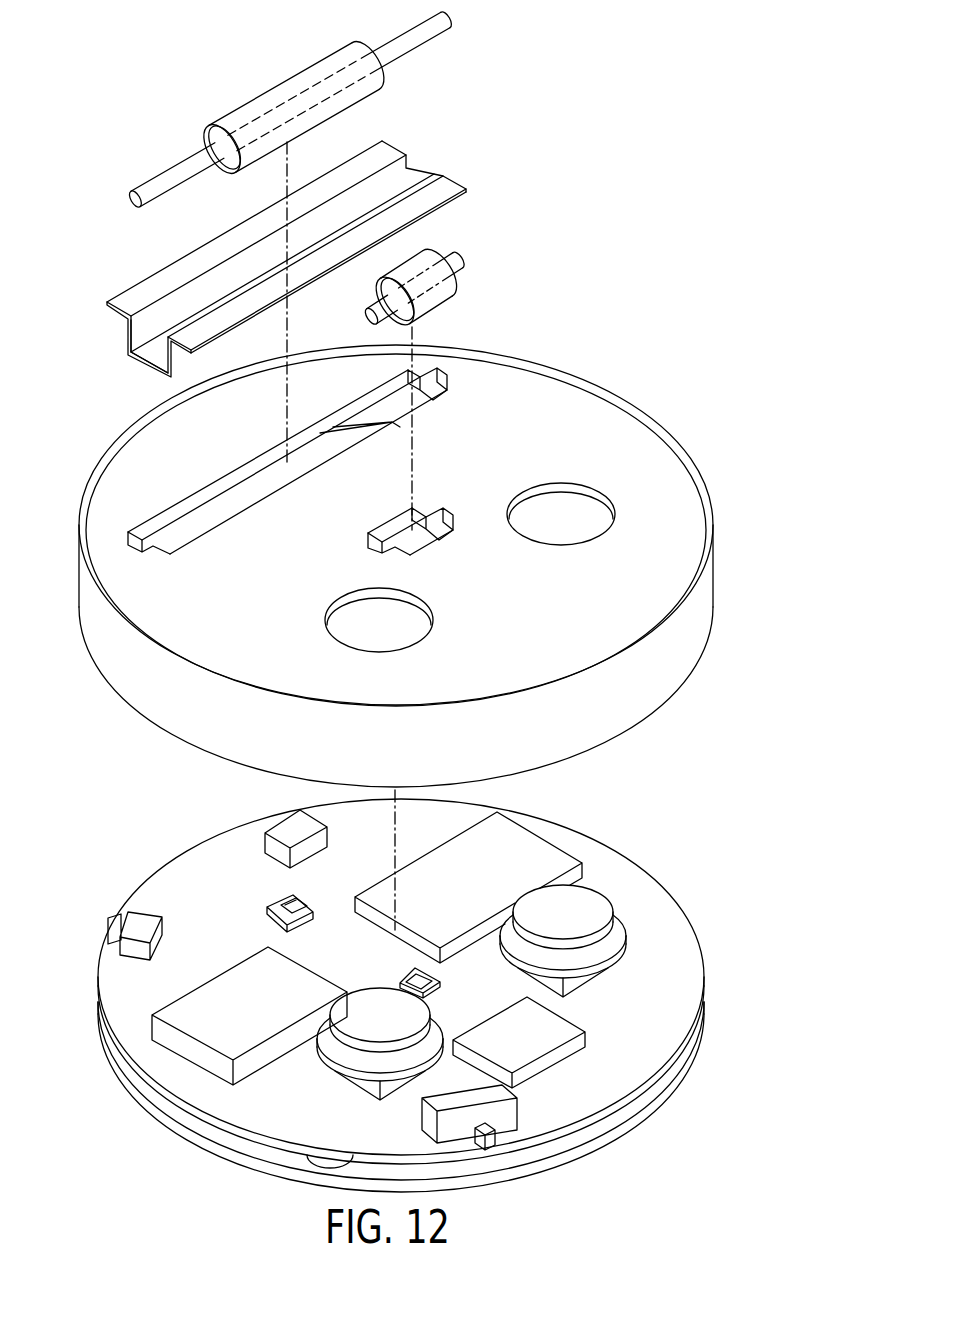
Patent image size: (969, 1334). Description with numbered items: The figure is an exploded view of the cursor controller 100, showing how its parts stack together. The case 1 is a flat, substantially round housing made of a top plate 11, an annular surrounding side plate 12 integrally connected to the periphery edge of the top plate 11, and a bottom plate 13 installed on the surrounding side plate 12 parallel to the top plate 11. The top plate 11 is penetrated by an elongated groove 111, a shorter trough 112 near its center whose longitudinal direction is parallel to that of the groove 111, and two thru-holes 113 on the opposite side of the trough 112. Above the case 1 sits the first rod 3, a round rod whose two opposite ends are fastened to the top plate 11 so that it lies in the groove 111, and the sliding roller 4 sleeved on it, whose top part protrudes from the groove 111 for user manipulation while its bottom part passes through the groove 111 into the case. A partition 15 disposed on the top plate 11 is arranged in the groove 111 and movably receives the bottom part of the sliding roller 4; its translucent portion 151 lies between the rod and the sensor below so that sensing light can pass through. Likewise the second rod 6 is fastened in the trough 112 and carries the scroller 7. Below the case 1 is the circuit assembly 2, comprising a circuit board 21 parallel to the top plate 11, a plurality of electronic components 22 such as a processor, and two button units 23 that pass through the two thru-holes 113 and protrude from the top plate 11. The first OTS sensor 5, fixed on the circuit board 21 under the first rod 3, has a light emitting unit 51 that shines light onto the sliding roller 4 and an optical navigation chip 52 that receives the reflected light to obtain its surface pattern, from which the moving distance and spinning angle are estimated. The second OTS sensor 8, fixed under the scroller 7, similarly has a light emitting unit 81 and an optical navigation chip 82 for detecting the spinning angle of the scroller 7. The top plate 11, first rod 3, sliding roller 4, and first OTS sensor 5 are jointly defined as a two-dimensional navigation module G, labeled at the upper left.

The cursor controller 100 is at (705, 26).
The two-dimensional navigation module G is at (58, 4).
The case 1 is at (613, 403).
The top plate 11 is at (165, 435).
The groove 111 is at (247, 487).
The trough 112 is at (397, 542).
The thru-holes 113 is at (358, 612).
The surrounding side plate 12 is at (120, 668).
The bottom plate 13 is at (630, 1122).
The partition 15 is at (158, 280).
The translucent portion 151 is at (157, 348).
The circuit assembly 2 is at (187, 1107).
The circuit board 21 is at (125, 1000).
The electronic components 22 is at (185, 1047).
The button units 23 is at (343, 1048).
The first rod 3 is at (178, 168).
The sliding roller 4 is at (280, 90).
The first OTS sensor 5 is at (259, 907).
The light emitting unit 51 is at (278, 917).
The optical navigation chip 52 is at (290, 900).
The second rod 6 is at (460, 262).
The scroller 7 is at (433, 307).
The second OTS sensor 8 is at (413, 949).
The light emitting unit 81 is at (395, 980).
The optical navigation chip 82 is at (415, 973).